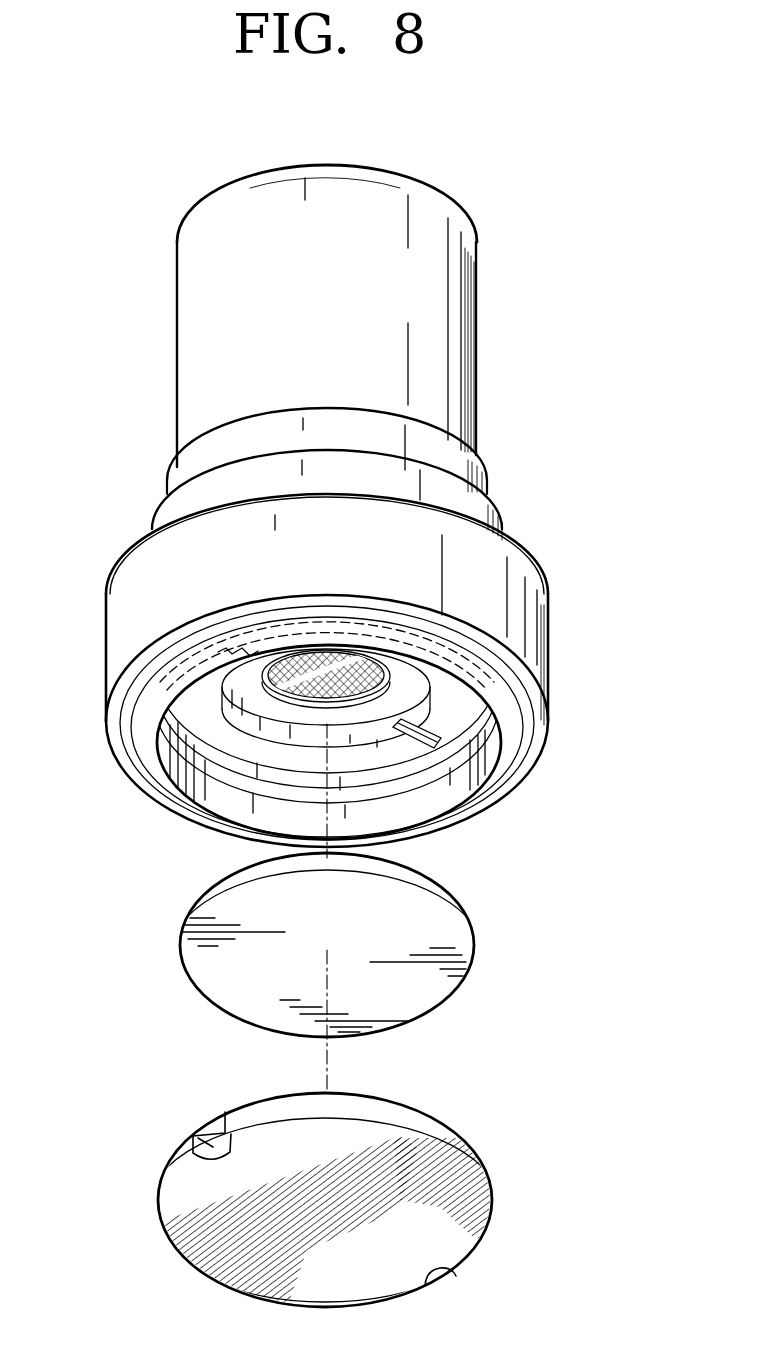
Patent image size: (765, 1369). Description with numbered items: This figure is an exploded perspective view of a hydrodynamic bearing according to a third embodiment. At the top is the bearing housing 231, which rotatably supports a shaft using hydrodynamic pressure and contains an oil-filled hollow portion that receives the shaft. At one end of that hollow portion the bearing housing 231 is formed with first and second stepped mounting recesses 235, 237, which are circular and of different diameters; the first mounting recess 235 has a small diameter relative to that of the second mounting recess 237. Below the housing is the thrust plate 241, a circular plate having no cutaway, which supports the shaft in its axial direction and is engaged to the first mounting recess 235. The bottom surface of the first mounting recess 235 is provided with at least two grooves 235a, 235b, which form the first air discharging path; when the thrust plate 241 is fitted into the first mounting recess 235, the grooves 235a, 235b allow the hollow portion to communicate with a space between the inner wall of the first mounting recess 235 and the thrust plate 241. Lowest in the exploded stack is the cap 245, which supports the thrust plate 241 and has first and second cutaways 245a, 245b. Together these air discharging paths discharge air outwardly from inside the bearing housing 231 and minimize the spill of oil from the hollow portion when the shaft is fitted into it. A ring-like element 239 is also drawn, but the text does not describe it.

The bearing housing 231 is at (475, 368).
The first mounting recess 235 is at (284, 666).
The groove 235a is at (417, 747).
The groove 235b is at (212, 648).
The second mounting recess 237 is at (475, 735).
The ring 239 is at (190, 800).
The thrust plate 241 is at (440, 1000).
The cap 245 is at (329, 1209).
The first cutaway 245a is at (200, 1130).
The second cutaway 245b is at (445, 1282).